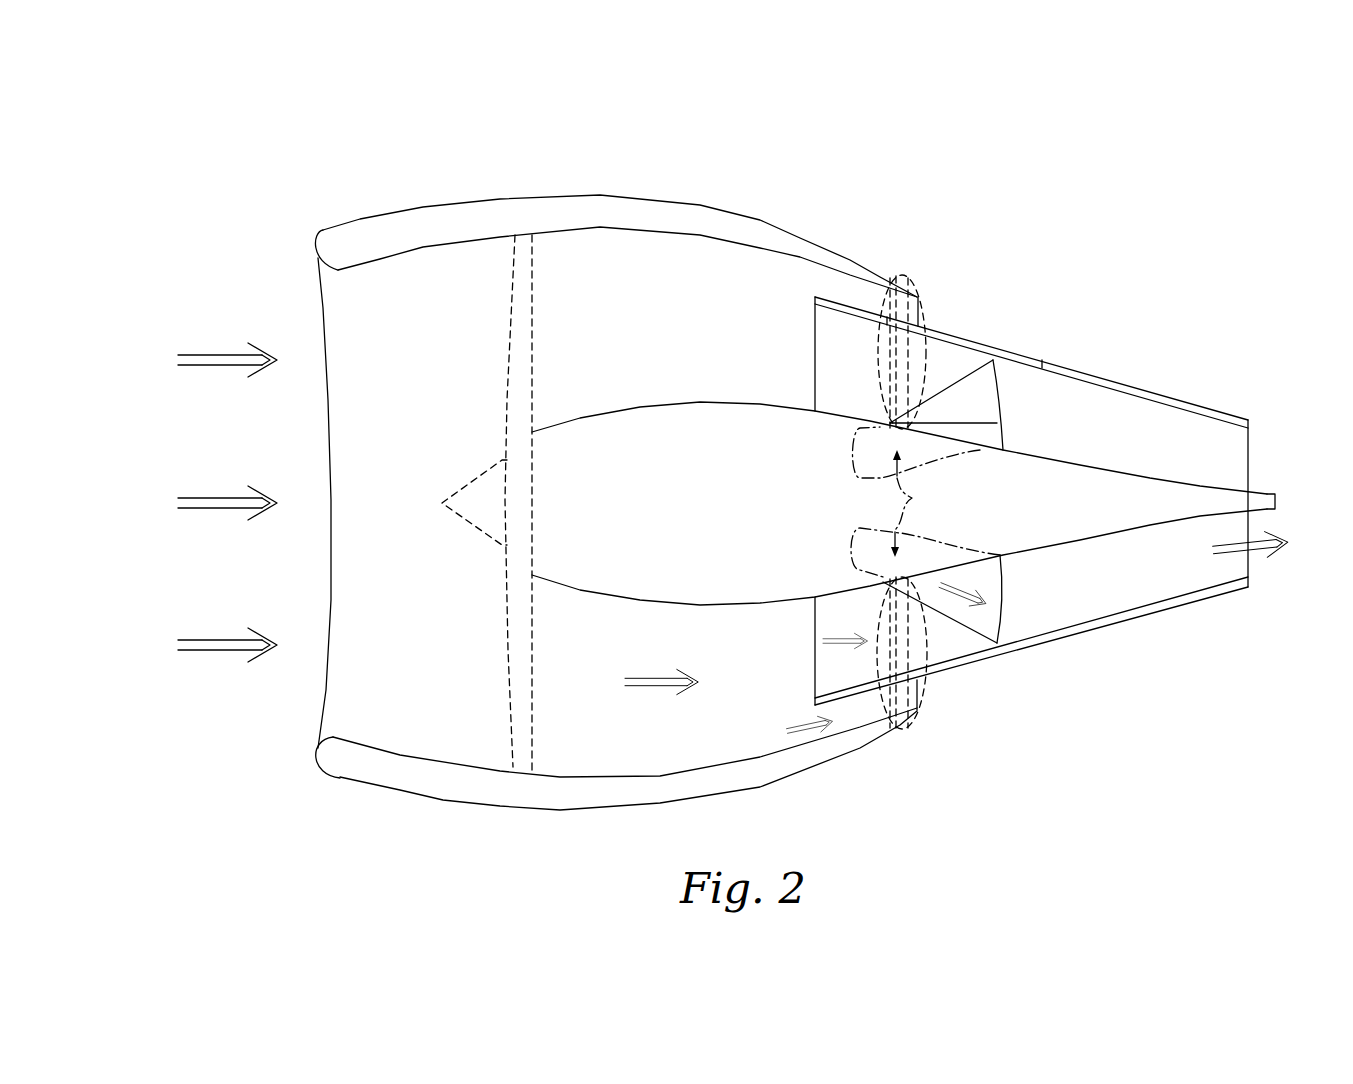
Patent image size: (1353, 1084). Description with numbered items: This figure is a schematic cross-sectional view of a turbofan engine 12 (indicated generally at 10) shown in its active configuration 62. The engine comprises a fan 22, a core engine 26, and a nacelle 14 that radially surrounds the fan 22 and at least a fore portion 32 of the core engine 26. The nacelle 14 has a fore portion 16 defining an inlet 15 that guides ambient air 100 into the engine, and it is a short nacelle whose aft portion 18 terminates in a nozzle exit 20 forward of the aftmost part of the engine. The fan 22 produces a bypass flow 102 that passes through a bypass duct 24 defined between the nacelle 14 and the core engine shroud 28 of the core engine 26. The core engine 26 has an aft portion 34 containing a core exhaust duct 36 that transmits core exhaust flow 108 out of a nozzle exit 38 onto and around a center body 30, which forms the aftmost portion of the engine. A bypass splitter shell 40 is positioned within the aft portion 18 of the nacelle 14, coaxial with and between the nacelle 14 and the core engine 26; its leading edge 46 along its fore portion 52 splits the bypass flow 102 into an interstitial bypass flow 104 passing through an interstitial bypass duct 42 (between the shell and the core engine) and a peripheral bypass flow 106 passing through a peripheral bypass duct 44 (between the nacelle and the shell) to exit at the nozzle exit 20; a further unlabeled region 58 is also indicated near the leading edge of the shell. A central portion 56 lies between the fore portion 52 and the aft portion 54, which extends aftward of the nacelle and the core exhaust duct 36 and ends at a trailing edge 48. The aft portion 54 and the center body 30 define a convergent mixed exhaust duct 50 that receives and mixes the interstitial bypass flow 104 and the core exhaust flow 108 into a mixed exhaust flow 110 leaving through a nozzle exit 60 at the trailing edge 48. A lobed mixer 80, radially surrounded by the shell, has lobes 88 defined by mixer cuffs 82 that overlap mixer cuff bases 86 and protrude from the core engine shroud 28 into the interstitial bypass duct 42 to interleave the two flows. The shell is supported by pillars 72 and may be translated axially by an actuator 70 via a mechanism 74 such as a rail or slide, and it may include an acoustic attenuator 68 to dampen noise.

The turbofan engine 10 is at (196, 105).
The turbofan engine 12 is at (216, 227).
The nacelle 14 is at (450, 188).
The inlet 15 is at (322, 308).
The fore portion 16 is at (325, 232).
The aft portion 18 is at (870, 265).
The nozzle exit 20 is at (928, 300).
The fan 22 is at (506, 657).
The bypass duct 24 is at (619, 327).
The core engine 26 is at (657, 517).
The core engine shroud 28 is at (692, 402).
The center body 30 is at (1050, 520).
The fore portion 32 is at (572, 563).
The aft portion 34 is at (800, 460).
The core exhaust duct 36 is at (912, 498).
The nozzle exit 38 is at (1015, 418).
The bypass splitter shell 40 is at (1066, 358).
The interstitial bypass duct 42 is at (836, 366).
The peripheral bypass duct 44 is at (836, 286).
The leading edge 46 is at (815, 298).
The trailing edge 48 is at (1250, 420).
The mixed exhaust duct 50 is at (1172, 438).
The fore portion 52 is at (855, 300).
The aft portion 54 is at (1245, 395).
The central portion 56 is at (990, 335).
The wall leading portion 58 is at (813, 390).
The nozzle exit 60 is at (1250, 462).
The active configuration 62 is at (1122, 160).
The acoustic attenuator 68 is at (1112, 395).
The actuator 70 is at (950, 323).
The pillar 72 is at (920, 300).
The mechanism 74 is at (940, 342).
The lobed mixer 80 is at (905, 360).
The mixer cuff 82 is at (1005, 382).
The mixer cuff base 86 is at (1005, 443).
The lobe 88 is at (978, 350).
The ambient air 100 is at (218, 371).
The bypass flow 102 is at (650, 688).
The interstitial bypass flow 104 is at (835, 652).
The peripheral bypass flow 106 is at (805, 733).
The core exhaust flow 108 is at (958, 597).
The mixed exhaust flow 110 is at (1265, 568).